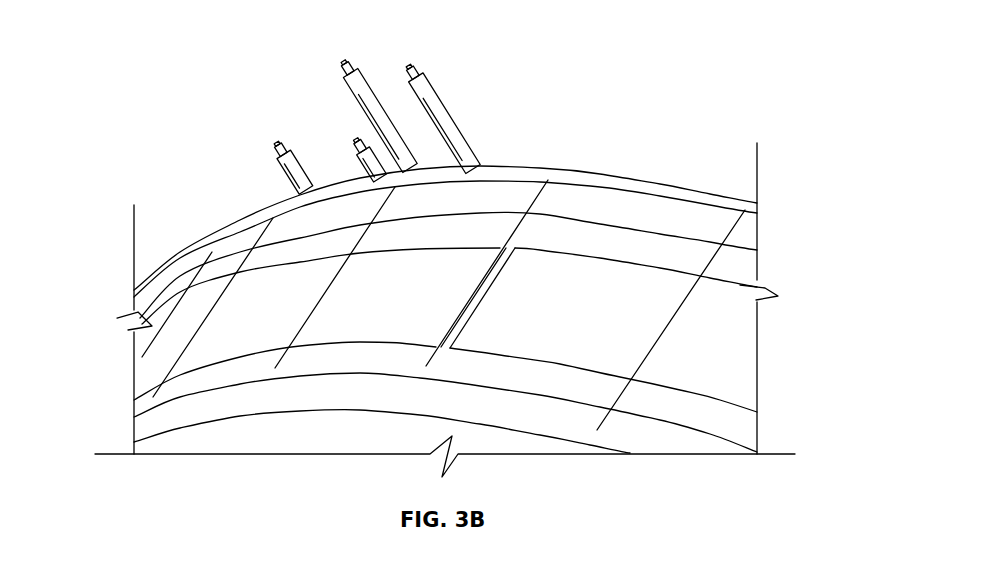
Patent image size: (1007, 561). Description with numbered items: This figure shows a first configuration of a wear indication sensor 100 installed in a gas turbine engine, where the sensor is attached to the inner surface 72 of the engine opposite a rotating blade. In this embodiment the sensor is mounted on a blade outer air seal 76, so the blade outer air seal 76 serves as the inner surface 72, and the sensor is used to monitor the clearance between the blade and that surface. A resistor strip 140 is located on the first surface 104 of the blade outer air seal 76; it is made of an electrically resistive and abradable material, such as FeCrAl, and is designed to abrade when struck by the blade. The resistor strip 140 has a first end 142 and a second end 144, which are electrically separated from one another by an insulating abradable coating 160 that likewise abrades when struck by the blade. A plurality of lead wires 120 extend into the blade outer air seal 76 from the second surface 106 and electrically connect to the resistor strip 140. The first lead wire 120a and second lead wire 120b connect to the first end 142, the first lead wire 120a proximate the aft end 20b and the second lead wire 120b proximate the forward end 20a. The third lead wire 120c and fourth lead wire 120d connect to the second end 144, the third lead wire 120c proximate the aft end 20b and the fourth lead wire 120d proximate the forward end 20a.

The wear indication sensor 100 is at (145, 72).
The plurality of lead wires 120 is at (264, 68).
The first lead wire 120a is at (353, 137).
The second lead wire 120b is at (407, 63).
The third lead wire 120c is at (277, 140).
The fourth lead wire 120d is at (340, 58).
The second surface 106 is at (211, 226).
The forward end 20a is at (563, 121).
The aft end 20b is at (314, 478).
The blade outer air seal 76 is at (670, 188).
The inner surface 72 is at (757, 208).
The second end 144 is at (478, 281).
The first end 142 is at (468, 327).
The resistor strip 140 is at (730, 352).
The insulating abradable coating 160 is at (730, 427).
The first surface 104 is at (288, 393).